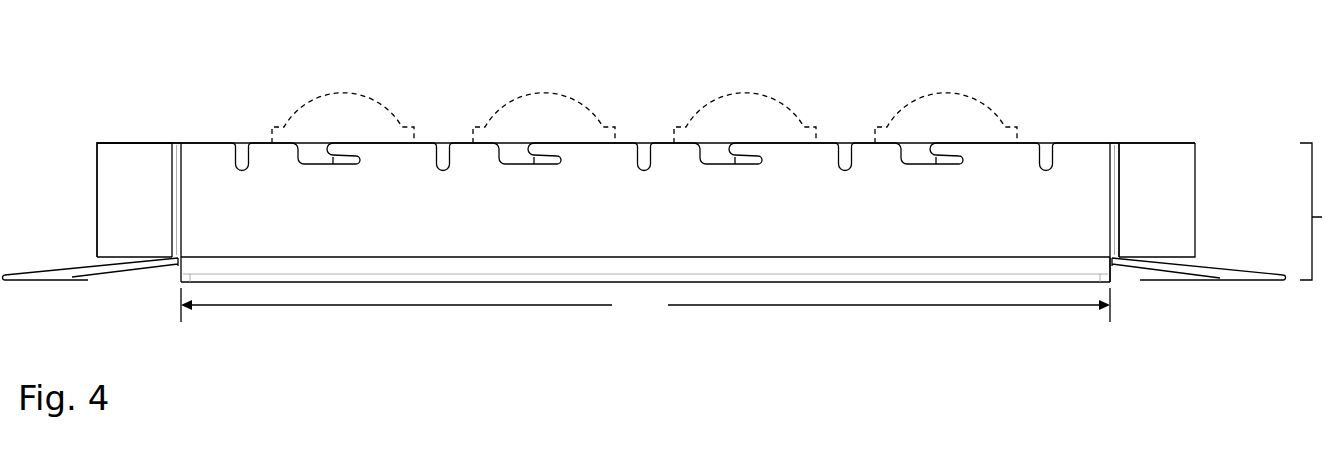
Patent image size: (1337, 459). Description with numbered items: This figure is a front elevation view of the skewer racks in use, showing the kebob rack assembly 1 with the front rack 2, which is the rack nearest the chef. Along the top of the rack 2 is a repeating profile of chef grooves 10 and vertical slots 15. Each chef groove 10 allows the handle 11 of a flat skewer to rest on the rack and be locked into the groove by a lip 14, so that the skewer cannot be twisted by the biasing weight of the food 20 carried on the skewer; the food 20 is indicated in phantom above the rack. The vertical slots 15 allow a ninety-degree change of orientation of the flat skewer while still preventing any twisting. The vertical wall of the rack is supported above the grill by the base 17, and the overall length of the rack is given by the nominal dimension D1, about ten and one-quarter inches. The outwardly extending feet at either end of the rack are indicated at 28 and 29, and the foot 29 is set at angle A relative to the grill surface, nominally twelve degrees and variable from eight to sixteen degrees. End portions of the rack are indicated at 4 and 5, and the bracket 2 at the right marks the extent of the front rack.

The kebob rack assembly 1 is at (443, 68).
The front rack 2 is at (1318, 211).
The left side wall 4 is at (110, 190).
The partition wall 5 is at (1128, 165).
The chef grooves 10 is at (309, 138).
The handle 11 is at (350, 155).
The lip 14 is at (334, 143).
The vertical slots 15 is at (242, 157).
The base 17 is at (1105, 266).
The food 20 is at (541, 103).
The left mounting flange 28 is at (76, 268).
The right mounting flange 29 is at (1205, 262).
The angle A is at (1172, 280).
The dimension D1 is at (645, 305).